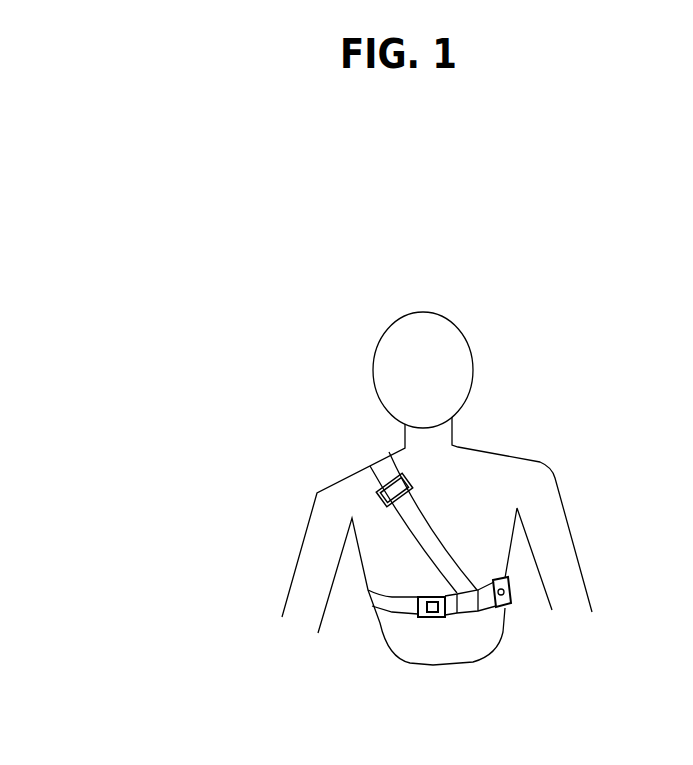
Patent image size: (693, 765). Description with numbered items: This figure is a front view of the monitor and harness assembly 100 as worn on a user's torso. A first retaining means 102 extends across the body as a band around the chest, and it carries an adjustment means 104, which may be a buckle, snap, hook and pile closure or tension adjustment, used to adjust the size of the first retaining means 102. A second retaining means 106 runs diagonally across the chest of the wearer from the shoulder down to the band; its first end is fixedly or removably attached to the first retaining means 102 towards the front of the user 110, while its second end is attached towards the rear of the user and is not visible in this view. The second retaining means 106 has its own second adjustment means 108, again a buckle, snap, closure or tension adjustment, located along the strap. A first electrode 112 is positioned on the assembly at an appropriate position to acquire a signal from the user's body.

The monitor and harness assembly 100 is at (112, 258).
The first retaining means 102 is at (372, 603).
The adjustment means 104 is at (433, 617).
The second retaining means 106 is at (373, 469).
The second adjustment means 108 is at (378, 493).
The front of the user 110 is at (468, 602).
The first electrode 112 is at (512, 587).